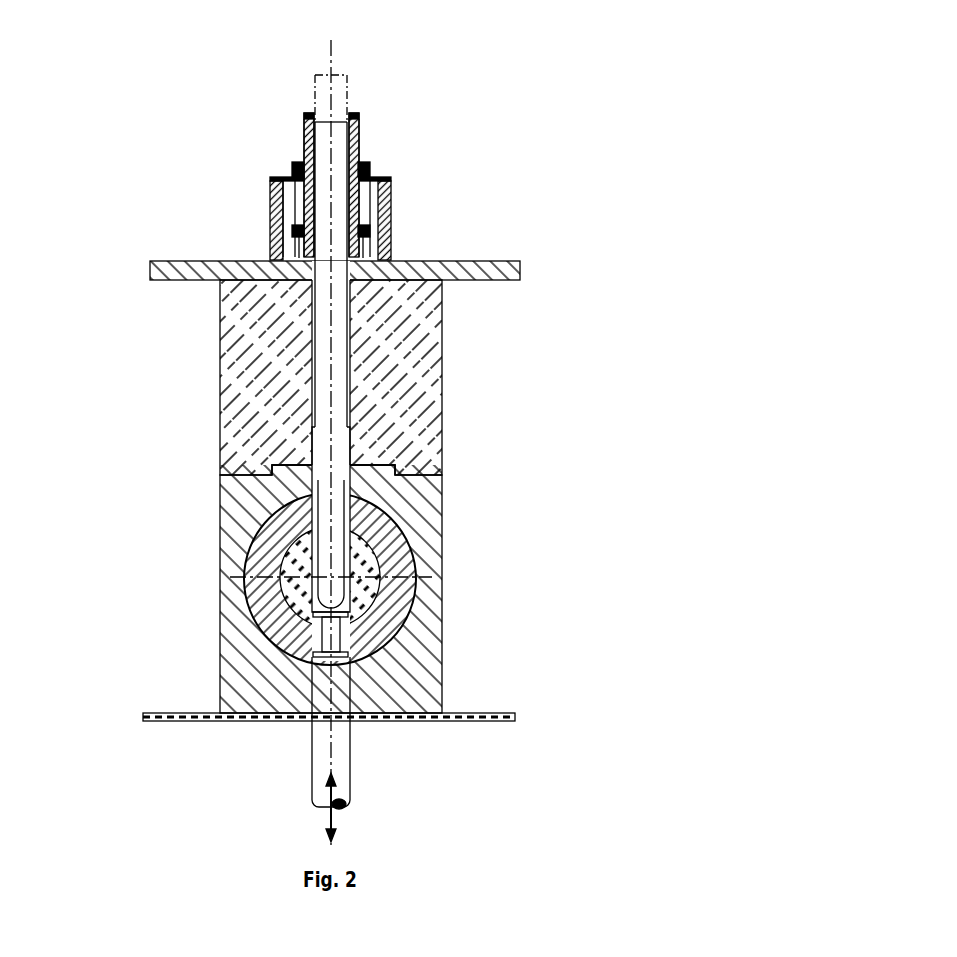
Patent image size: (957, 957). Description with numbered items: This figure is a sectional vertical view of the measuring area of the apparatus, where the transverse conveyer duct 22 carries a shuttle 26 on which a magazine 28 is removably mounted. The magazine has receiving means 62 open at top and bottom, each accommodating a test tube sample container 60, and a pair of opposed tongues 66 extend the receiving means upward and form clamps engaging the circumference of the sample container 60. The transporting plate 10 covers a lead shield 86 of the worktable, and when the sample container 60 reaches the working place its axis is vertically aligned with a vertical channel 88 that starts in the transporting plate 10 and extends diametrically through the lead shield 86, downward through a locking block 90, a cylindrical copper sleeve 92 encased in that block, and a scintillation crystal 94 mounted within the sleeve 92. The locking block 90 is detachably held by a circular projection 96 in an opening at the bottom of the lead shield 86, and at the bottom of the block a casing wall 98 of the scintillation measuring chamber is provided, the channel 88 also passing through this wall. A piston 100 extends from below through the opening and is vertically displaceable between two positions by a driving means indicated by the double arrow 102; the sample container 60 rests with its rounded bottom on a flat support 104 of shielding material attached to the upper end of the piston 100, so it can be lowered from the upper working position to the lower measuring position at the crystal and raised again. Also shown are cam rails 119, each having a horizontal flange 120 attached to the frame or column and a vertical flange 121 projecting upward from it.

The transporting plate 10 is at (510, 268).
The transverse conveyer duct 22 is at (292, 203).
The shuttle 26 is at (363, 245).
The magazine 28 is at (358, 208).
The sample container 60 is at (335, 88).
The receiving means 62 is at (358, 128).
The tongues 66 is at (357, 143).
The lead shield 86 is at (412, 303).
The vertical channel 88 is at (325, 372).
The locking block 90 is at (412, 510).
The cylindrical copper sleeve 92 is at (385, 548).
The scintillation crystal 94 is at (352, 590).
The circular projection 96 is at (390, 464).
The casing wall 98 is at (500, 716).
The piston 100 is at (338, 733).
The double arrow 102 is at (340, 812).
The flat support 104 is at (345, 622).
The rail 119 is at (271, 187).
The horizontal flange 120 is at (280, 174).
The vertical flange 121 is at (296, 160).